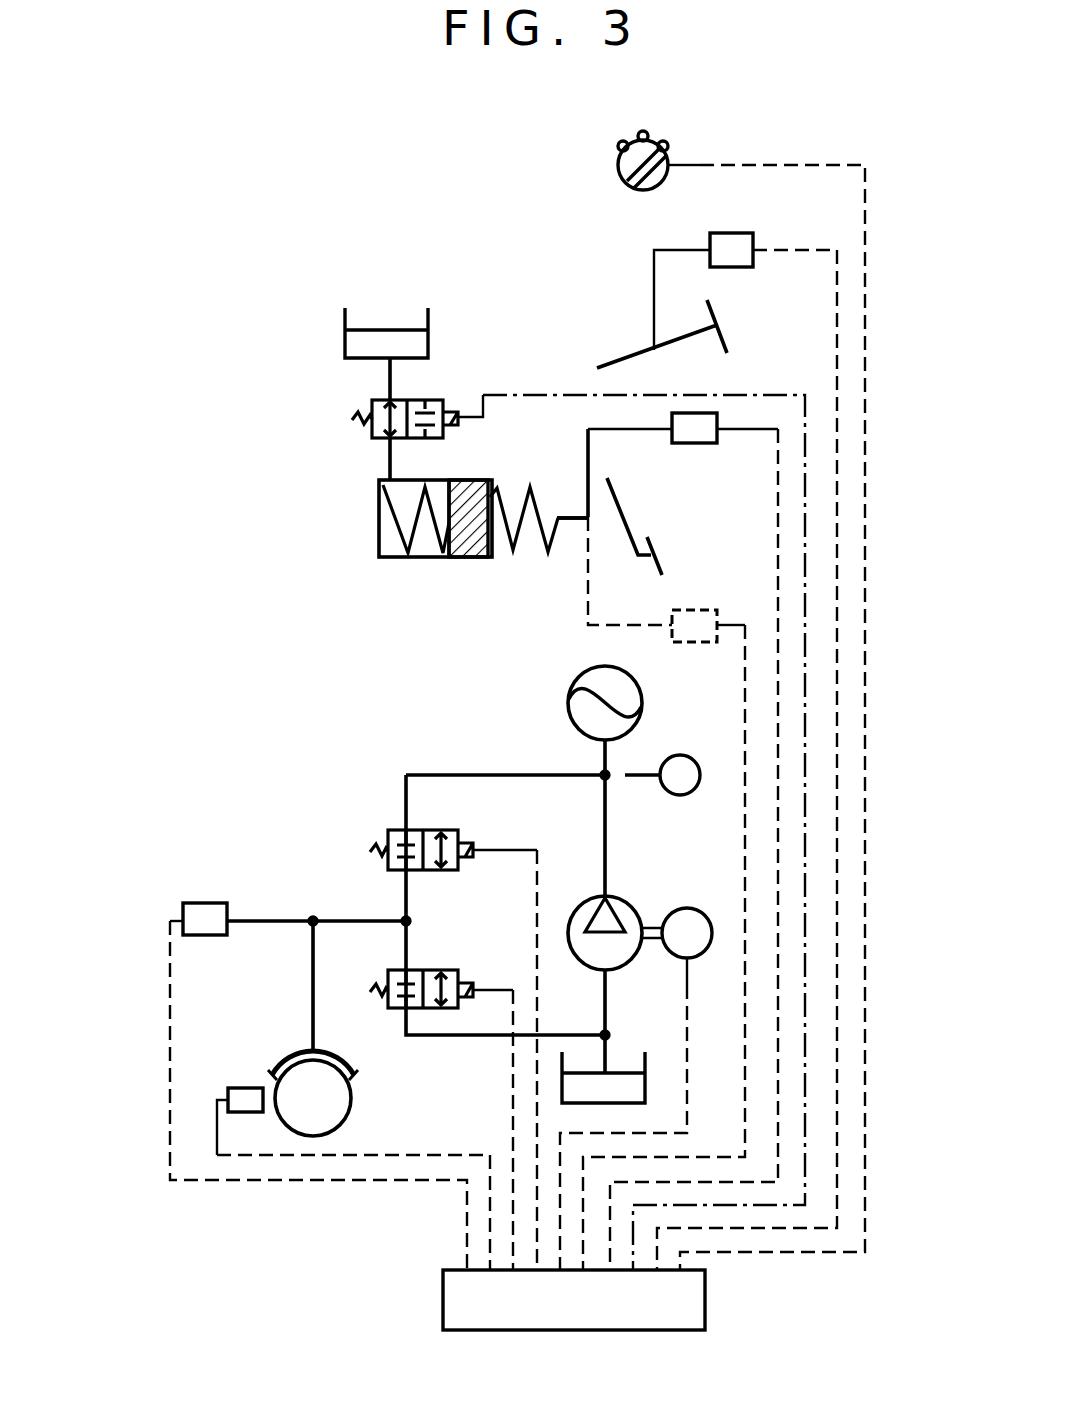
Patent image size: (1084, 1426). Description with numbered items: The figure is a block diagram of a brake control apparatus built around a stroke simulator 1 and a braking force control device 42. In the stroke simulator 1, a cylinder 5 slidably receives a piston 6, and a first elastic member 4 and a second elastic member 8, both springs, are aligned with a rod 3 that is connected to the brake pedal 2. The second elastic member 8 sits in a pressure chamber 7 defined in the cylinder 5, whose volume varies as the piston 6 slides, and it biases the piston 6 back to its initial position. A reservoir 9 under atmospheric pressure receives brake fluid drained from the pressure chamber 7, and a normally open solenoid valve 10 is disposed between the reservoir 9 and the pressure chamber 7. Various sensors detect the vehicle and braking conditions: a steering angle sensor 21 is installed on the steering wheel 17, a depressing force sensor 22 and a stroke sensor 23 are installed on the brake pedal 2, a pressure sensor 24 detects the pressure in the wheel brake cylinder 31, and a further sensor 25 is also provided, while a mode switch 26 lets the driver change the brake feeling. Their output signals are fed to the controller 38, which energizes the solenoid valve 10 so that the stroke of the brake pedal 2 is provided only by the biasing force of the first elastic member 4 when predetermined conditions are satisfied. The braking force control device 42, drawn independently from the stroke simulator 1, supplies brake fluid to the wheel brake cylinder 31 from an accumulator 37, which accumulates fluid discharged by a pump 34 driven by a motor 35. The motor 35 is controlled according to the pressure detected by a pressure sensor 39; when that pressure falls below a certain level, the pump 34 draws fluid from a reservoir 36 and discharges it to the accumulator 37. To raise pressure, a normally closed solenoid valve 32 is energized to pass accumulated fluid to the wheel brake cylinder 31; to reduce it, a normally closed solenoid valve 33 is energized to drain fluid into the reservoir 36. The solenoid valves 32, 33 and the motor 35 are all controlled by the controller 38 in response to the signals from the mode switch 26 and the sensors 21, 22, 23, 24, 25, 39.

The stroke simulator 1 is at (436, 522).
The brake pedal 2 is at (649, 562).
The rod 3 is at (566, 522).
The first elastic member 4 is at (499, 492).
The cylinder 5 is at (402, 562).
The piston 6 is at (467, 552).
The pressure chamber 7 is at (436, 552).
The second elastic member 8 is at (402, 525).
The reservoir 9 is at (428, 347).
The solenoid valve 10 is at (415, 398).
The steering wheel 17 is at (727, 338).
The steering angle sensor 21 is at (722, 233).
The depressing force sensor 22 is at (698, 445).
The stroke sensor 23 is at (699, 610).
The pressure sensor 24 is at (215, 903).
The sensor 25 is at (256, 1088).
The mode switch 26 is at (620, 146).
The wheel brake cylinder 31 is at (342, 1063).
The normally closed solenoid valve 32 is at (418, 830).
The normally closed solenoid valve 33 is at (418, 970).
The pump 34 is at (625, 903).
The motor 35 is at (690, 908).
The reservoir 36 is at (615, 1070).
The accumulator 37 is at (637, 672).
The controller 38 is at (705, 1296).
The pressure sensor 39 is at (679, 754).
The braking force control device 42 is at (404, 888).